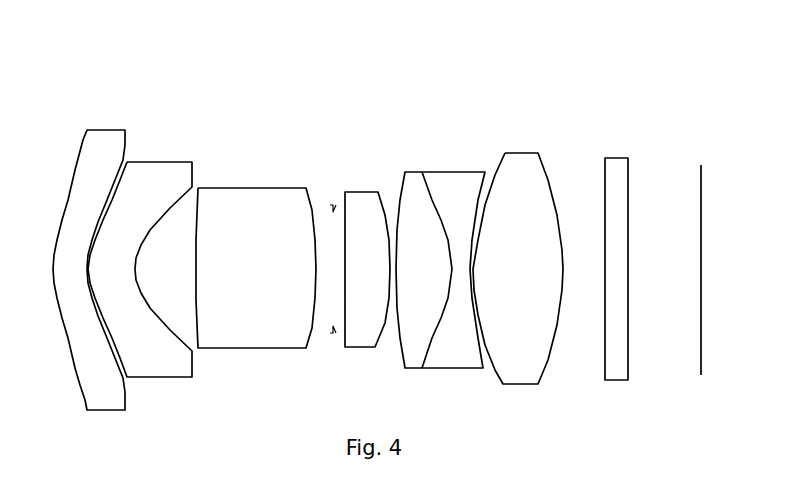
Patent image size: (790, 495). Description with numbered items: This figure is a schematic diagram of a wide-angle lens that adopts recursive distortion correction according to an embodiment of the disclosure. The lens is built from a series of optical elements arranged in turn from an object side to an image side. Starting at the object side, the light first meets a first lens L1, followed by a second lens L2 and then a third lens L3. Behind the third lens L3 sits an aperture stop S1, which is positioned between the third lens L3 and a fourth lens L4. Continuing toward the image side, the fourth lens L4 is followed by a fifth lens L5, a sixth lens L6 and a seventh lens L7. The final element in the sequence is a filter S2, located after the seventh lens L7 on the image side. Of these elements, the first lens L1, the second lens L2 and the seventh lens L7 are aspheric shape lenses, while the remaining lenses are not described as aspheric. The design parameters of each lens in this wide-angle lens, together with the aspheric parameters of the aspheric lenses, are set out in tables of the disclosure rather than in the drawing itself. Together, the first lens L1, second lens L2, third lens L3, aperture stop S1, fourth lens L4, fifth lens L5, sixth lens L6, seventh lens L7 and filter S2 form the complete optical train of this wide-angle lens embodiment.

The first lens L1 is at (98, 129).
The second lens L2 is at (158, 161).
The third lens L3 is at (239, 187).
The aperture stop S1 is at (333, 203).
The fourth lens L4 is at (357, 191).
The fifth lens L5 is at (413, 171).
The sixth lens L6 is at (458, 171).
The seventh lens L7 is at (520, 152).
The filter S2 is at (615, 157).